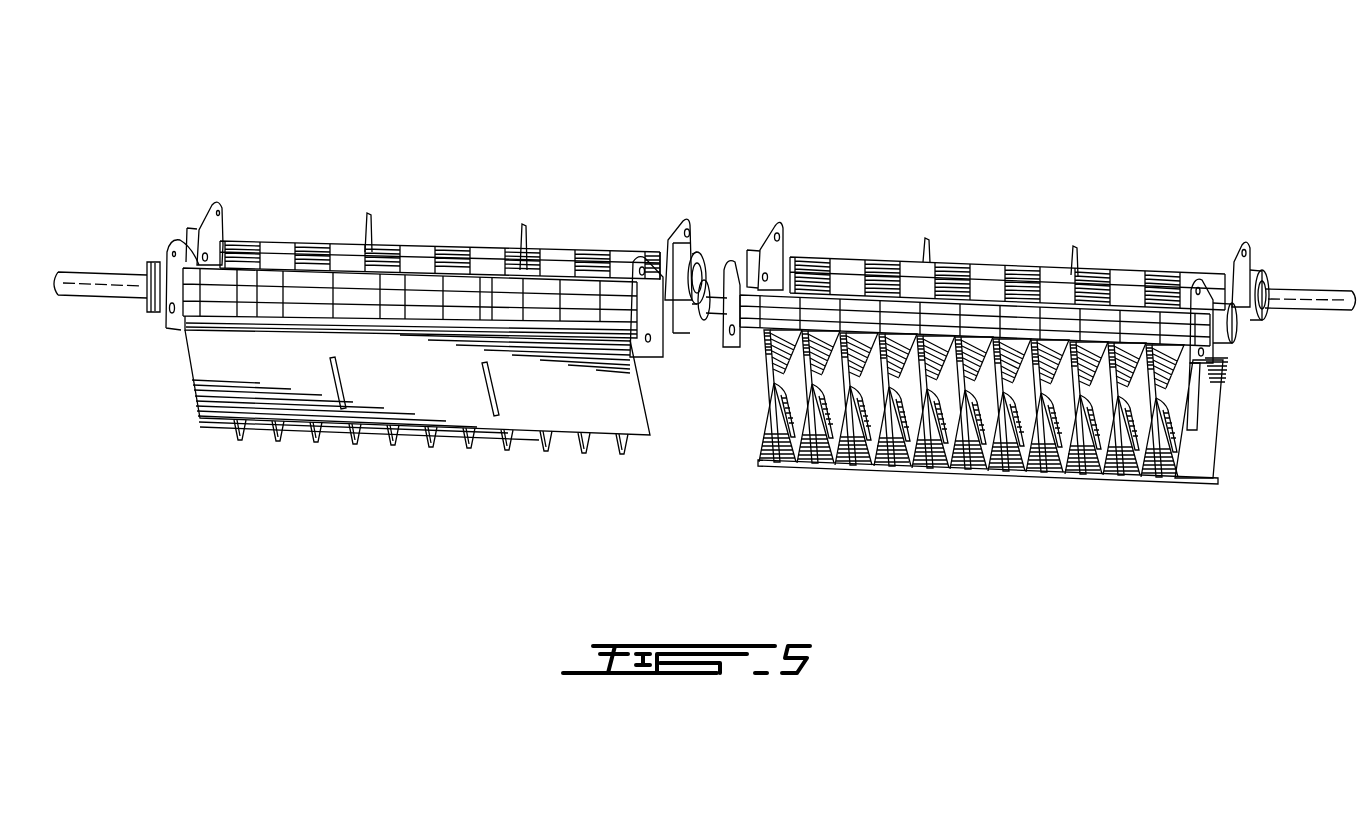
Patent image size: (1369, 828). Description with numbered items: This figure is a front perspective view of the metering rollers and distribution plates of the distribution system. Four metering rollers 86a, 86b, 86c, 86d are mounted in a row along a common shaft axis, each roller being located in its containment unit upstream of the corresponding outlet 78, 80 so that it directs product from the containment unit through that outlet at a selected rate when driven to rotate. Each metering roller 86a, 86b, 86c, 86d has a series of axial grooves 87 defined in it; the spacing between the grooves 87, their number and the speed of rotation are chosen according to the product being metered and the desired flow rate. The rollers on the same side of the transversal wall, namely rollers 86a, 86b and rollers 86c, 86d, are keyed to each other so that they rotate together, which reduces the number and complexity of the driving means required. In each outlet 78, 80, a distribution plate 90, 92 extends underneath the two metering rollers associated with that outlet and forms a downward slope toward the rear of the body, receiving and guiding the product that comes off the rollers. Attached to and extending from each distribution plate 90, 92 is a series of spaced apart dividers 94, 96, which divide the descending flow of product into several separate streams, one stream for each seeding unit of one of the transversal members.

The outlet 78 is at (977, 488).
The outlet 80 is at (317, 460).
The metering roller 86a is at (990, 278).
The metering roller 86b is at (443, 262).
The metering roller 86c is at (833, 305).
The metering roller 86d is at (275, 276).
The axial grooves 87 is at (272, 295).
The distribution plate 90 is at (1197, 480).
The distribution plate 92 is at (610, 405).
The dividers 94 is at (907, 382).
The dividers 96 is at (505, 452).